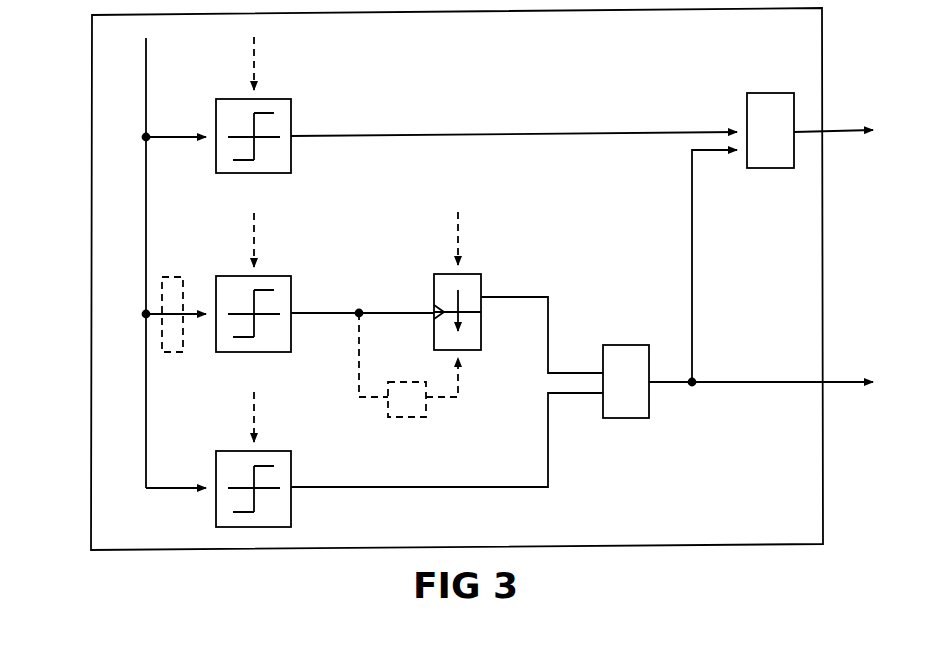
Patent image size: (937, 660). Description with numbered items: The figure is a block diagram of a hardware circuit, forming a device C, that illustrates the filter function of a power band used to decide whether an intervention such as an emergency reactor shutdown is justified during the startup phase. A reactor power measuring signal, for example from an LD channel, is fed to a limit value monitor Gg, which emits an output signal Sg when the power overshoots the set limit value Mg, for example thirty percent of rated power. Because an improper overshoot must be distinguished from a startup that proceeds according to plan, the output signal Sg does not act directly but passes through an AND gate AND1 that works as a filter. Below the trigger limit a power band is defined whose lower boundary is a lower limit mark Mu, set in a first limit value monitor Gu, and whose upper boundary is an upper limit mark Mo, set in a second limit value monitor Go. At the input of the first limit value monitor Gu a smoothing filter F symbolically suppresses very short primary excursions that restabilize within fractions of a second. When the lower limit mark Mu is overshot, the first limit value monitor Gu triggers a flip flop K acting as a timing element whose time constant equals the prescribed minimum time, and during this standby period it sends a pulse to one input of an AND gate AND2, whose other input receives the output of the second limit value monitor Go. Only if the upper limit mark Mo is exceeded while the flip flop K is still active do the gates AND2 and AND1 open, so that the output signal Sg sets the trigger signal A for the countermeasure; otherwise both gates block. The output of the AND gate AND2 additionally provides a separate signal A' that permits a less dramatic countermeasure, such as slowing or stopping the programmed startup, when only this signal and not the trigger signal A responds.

The device C is at (86, 416).
The limit value monitor Gg is at (291, 157).
The limit value Mg is at (275, 63).
The output signal Sg is at (460, 133).
The first limit value monitor Gu is at (291, 290).
The lower limit mark Mu is at (275, 240).
The smoothing filter F is at (178, 352).
The second limit value monitor Go is at (291, 467).
The upper limit mark Mo is at (275, 417).
The flip flop K is at (481, 333).
The inverter (-1) N is at (423, 412).
The AND gate AND2 is at (649, 403).
The trigger signal A' is at (761, 335).
The AND gate AND1 is at (770, 168).
The trigger signal A is at (833, 85).